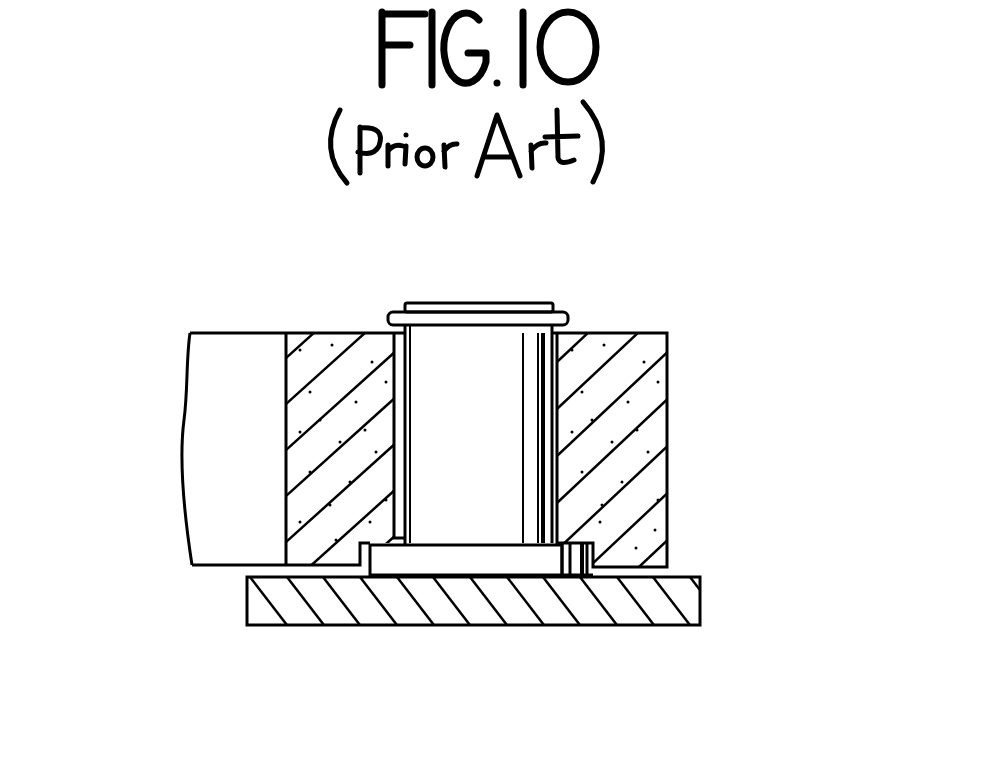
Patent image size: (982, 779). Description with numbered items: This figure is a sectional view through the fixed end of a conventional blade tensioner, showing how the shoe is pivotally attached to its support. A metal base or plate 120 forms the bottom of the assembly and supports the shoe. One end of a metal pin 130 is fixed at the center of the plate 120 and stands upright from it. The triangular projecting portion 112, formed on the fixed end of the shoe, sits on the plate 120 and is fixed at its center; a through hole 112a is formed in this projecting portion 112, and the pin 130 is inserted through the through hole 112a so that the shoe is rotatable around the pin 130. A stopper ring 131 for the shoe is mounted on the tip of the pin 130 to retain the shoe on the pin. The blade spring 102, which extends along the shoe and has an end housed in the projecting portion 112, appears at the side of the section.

The blade spring 102 is at (213, 530).
The triangular projecting portion 112 is at (657, 428).
The through hole 112a is at (407, 471).
The base or plate 120 is at (685, 602).
The metal pin 130 is at (418, 378).
The stopper ring 131 is at (568, 320).